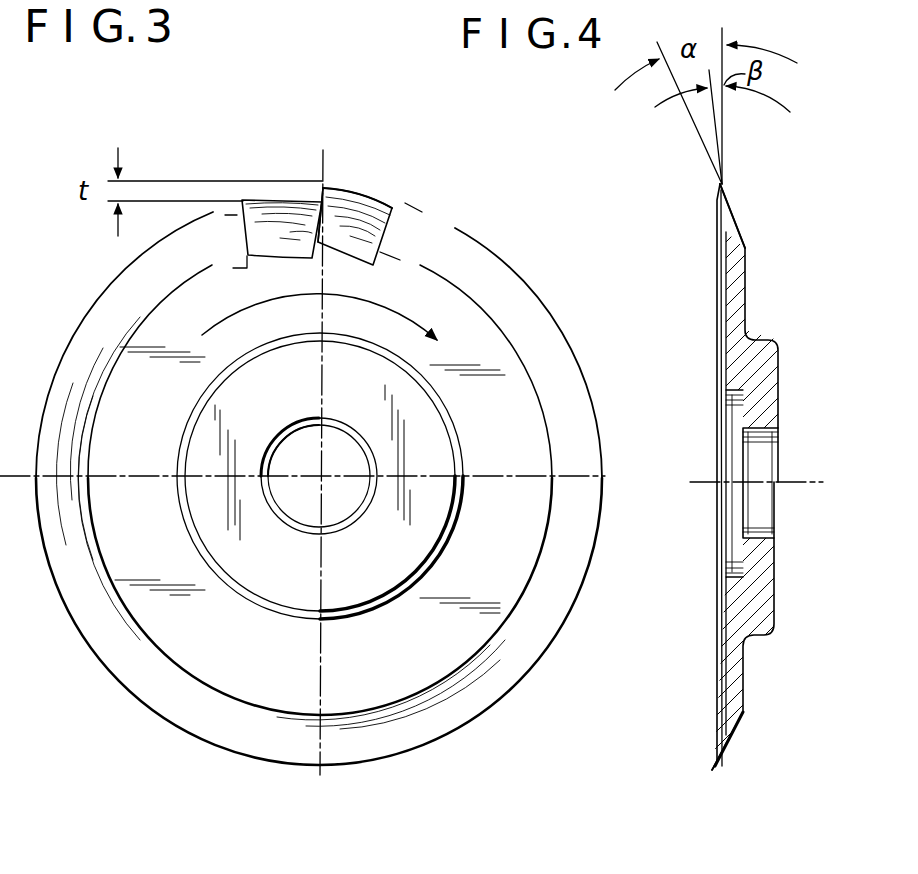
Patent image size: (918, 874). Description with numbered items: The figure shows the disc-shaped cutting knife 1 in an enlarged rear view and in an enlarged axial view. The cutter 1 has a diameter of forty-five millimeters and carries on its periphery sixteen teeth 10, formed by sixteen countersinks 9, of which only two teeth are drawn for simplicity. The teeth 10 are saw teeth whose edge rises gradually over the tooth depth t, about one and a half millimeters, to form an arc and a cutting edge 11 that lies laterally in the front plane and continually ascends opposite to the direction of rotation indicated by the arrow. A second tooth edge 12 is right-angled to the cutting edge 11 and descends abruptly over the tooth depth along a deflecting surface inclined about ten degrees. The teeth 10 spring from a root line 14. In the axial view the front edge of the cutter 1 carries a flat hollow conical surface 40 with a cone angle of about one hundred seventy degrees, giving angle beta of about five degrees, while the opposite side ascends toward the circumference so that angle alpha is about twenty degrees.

In FIG. 3, the disc-shaped cutting knife 1 is at (514, 242).
In FIG. 4, the disc-shaped cutting knife 1 is at (703, 257).
In FIG. 3, the tooth flanks 9 is at (383, 222).
In FIG. 3, the teeth 10 is at (338, 186).
In FIG. 4, the teeth 10 is at (735, 217).
In FIG. 3, the cutting edge 11 is at (365, 194).
In FIG. 3, the second tooth edge 12 is at (322, 202).
In FIG. 3, the root line 14 is at (505, 333).
In FIG. 4, the conical surface 40 is at (718, 694).